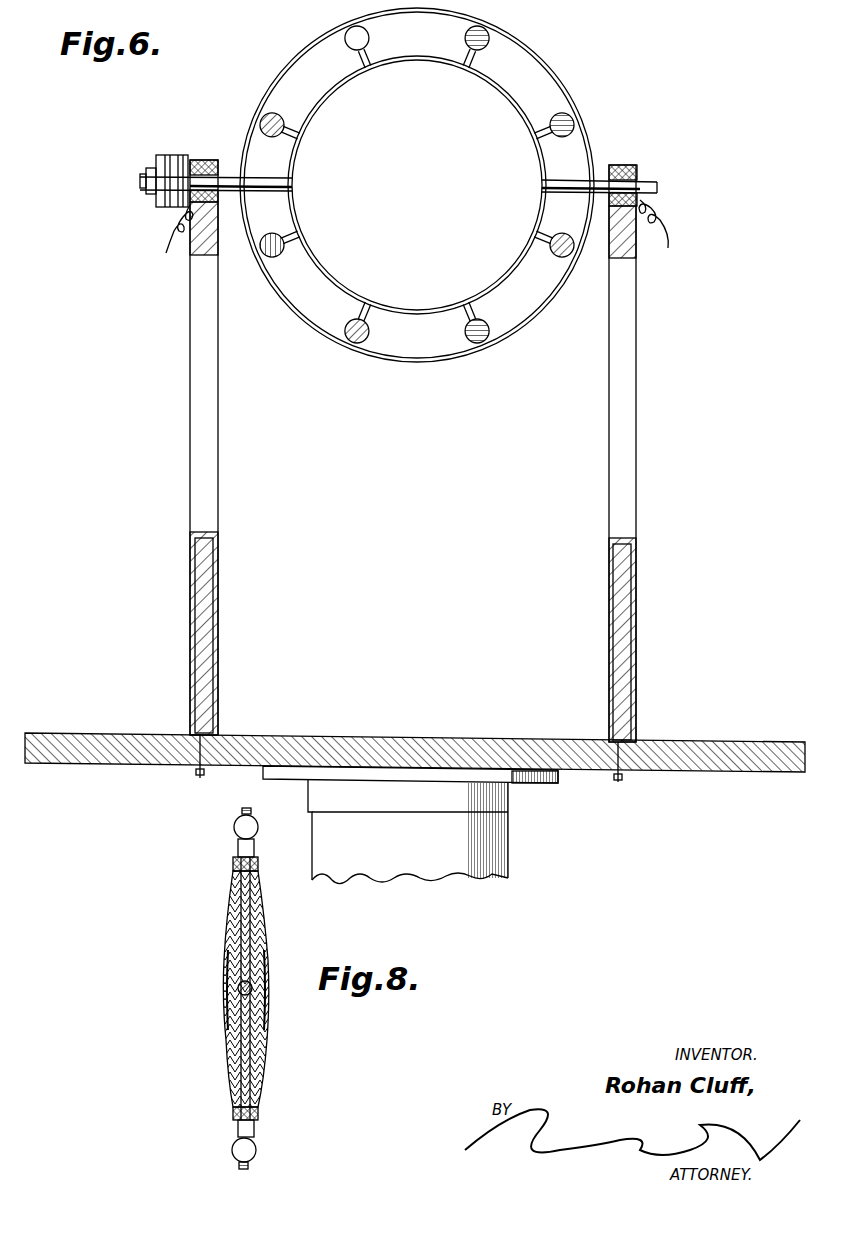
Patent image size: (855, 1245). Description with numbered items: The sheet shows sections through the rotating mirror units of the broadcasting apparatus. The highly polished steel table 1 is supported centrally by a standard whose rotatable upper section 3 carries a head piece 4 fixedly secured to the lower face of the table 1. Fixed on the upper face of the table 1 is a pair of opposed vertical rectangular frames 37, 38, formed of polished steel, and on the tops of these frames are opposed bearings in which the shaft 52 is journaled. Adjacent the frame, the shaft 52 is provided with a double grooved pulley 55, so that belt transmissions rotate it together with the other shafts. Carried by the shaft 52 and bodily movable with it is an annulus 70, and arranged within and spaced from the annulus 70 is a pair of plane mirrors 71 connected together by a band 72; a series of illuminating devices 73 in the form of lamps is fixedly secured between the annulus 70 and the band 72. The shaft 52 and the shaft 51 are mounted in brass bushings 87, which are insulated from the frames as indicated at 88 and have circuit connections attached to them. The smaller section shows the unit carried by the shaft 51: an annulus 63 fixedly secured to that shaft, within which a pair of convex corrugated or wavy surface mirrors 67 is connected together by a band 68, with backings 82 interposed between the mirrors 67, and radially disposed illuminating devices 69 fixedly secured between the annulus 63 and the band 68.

In FIG. 6, the table 1 is at (414, 746).
In FIG. 6, the rotatable upper section 3 is at (510, 855).
In FIG. 6, the head piece 4 is at (525, 780).
In FIG. 6, the frame 37 is at (622, 402).
In FIG. 6, the frame 38 is at (206, 373).
In FIG. 8, the shaft 51 is at (252, 992).
In FIG. 6, the shaft 52 is at (232, 176).
In FIG. 6, the double grooved pulley 55 is at (158, 165).
In FIG. 8, the annulus 63 is at (246, 808).
In FIG. 6, the convex corrugated mirrors 67 is at (640, 180).
In FIG. 8, the convex corrugated mirrors 67 is at (228, 955).
In FIG. 8, the band 68 is at (258, 866).
In FIG. 8, the illuminating devices 69 is at (248, 826).
In FIG. 6, the annulus 70 is at (562, 92).
In FIG. 6, the plane mirrors 71 is at (330, 85).
In FIG. 6, the band 72 is at (508, 276).
In FIG. 6, the illuminating devices 73 is at (278, 258).
In FIG. 8, the backings 82 is at (266, 922).
In FIG. 6, the brass bushings 87 is at (212, 195).
In FIG. 6, the insulation 88 is at (206, 162).